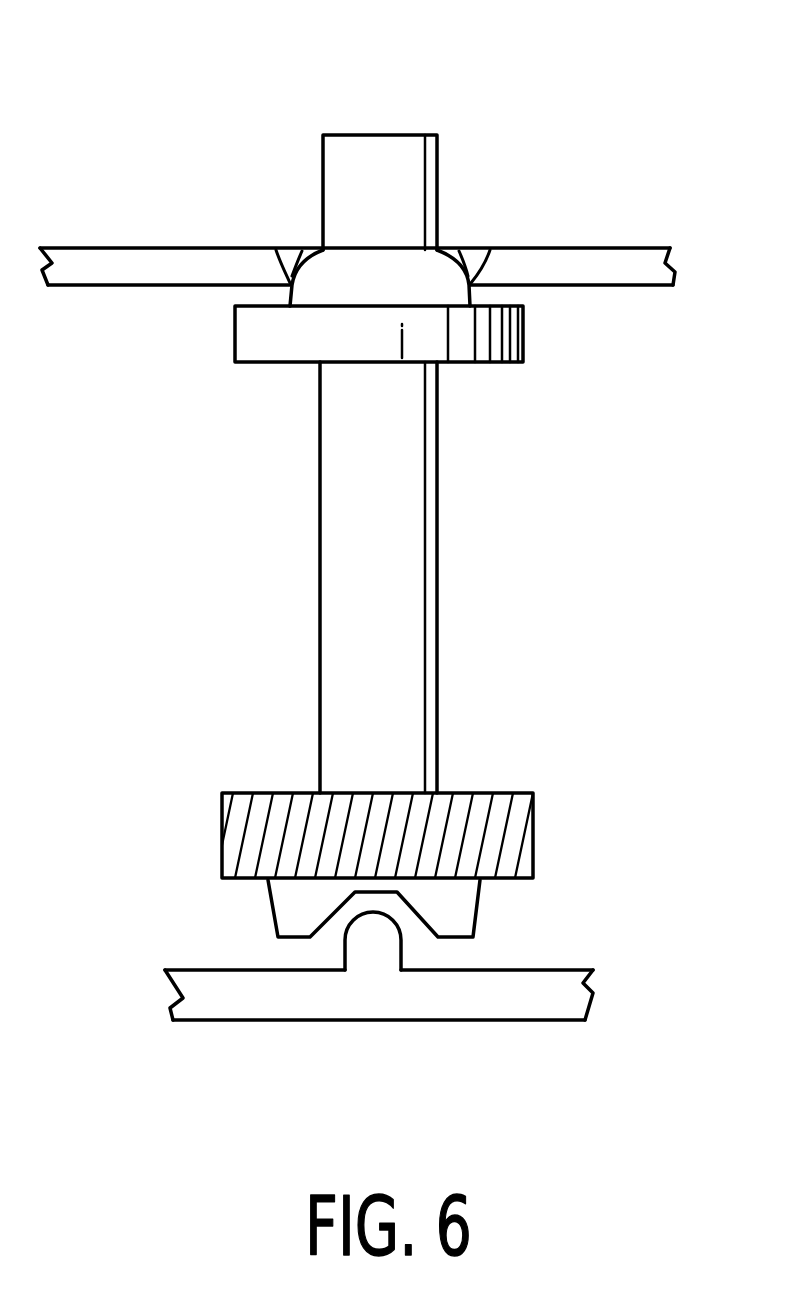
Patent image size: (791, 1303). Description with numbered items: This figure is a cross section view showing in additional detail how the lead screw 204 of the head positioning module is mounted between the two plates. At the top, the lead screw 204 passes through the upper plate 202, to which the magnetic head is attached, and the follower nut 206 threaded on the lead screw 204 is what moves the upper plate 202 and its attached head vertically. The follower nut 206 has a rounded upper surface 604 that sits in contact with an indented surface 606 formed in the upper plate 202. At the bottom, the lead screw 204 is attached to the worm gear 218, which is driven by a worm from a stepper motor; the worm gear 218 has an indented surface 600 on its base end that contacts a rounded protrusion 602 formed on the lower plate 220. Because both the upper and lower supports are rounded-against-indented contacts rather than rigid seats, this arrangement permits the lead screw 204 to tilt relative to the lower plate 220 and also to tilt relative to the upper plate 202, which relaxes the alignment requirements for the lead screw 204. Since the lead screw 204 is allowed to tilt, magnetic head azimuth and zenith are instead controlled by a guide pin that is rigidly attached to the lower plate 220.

The upper plate 202 is at (605, 248).
The lead screw 204 is at (380, 134).
The follower nut 206 is at (525, 342).
The worm gear 218 is at (500, 793).
The lower plate 220 is at (453, 1022).
The indented surface 600 is at (427, 920).
The rounded protrusion 602 is at (342, 942).
The rounded upper surface 604 is at (477, 259).
The indented surface 606 is at (273, 247).